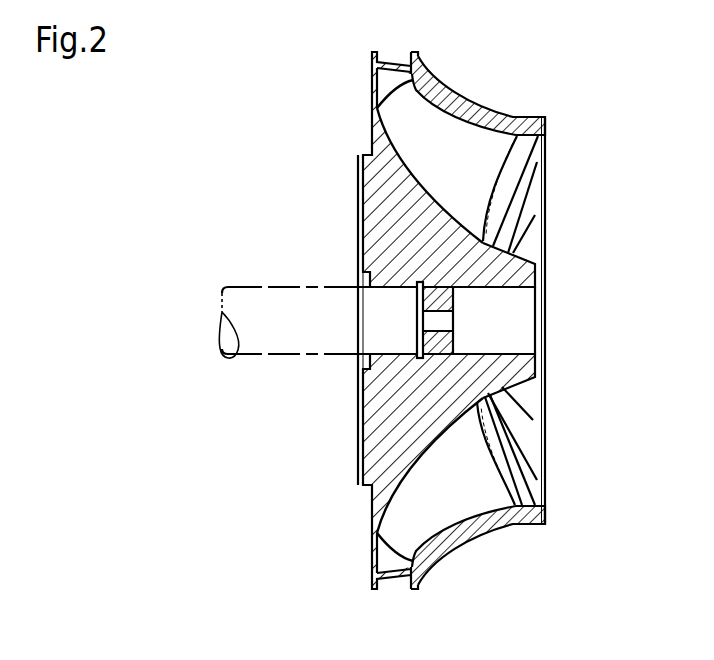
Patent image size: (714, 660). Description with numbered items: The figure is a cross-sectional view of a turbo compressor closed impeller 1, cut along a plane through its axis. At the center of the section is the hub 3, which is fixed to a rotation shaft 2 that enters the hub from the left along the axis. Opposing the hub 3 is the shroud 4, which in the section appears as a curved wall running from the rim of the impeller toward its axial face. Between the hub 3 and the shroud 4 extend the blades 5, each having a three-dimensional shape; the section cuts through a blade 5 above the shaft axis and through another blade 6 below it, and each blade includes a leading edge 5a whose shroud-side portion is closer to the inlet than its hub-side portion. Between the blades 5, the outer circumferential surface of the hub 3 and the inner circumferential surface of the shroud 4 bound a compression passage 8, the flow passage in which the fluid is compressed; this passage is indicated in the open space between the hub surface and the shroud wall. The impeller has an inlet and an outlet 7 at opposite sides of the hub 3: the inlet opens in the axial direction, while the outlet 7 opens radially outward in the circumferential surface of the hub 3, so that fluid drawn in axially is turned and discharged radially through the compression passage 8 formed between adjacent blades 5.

The turbo compressor closed impeller 1 is at (478, 83).
The rotation shaft 2 is at (260, 287).
The hub 3 is at (527, 273).
The shroud 4 is at (529, 121).
The blade 5 is at (480, 176).
The leading edge 5a is at (540, 216).
The inlet 6 is at (540, 444).
The outlet 7 is at (393, 588).
The compression passage 8 is at (456, 170).